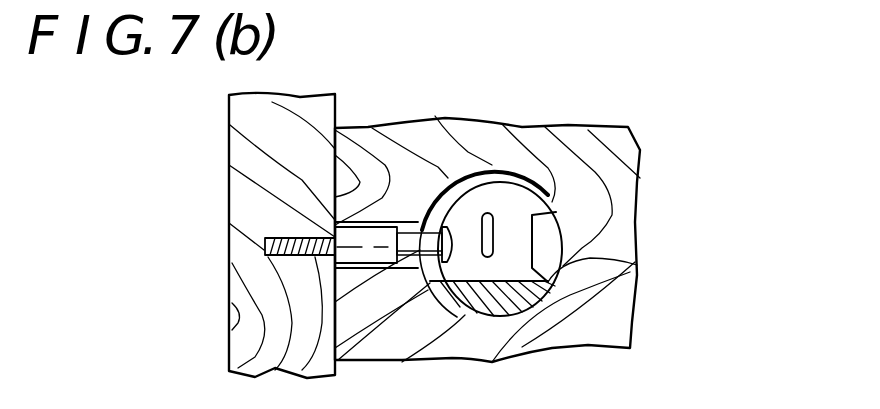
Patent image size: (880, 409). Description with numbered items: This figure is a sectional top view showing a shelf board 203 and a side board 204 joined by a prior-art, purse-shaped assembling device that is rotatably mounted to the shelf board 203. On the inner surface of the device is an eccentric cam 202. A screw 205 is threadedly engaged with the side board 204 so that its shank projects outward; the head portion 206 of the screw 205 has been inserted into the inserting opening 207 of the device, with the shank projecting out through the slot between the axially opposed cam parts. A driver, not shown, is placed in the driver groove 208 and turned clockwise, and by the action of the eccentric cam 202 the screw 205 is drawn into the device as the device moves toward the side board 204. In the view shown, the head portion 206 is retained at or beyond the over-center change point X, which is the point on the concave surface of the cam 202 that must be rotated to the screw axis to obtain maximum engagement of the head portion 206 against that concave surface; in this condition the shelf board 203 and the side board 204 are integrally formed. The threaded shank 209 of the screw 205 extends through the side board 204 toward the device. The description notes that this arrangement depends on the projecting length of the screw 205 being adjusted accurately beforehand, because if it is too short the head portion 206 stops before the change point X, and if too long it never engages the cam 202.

The eccentric cam 202 is at (452, 178).
The shelf board 203 is at (583, 148).
The side board 204 is at (244, 166).
The screw 205 is at (370, 248).
The head portion 206 is at (481, 298).
The inserting opening 207 is at (555, 253).
The driver groove 208 is at (492, 223).
The threaded shaft 209 is at (286, 256).
The over-center change point X is at (420, 225).